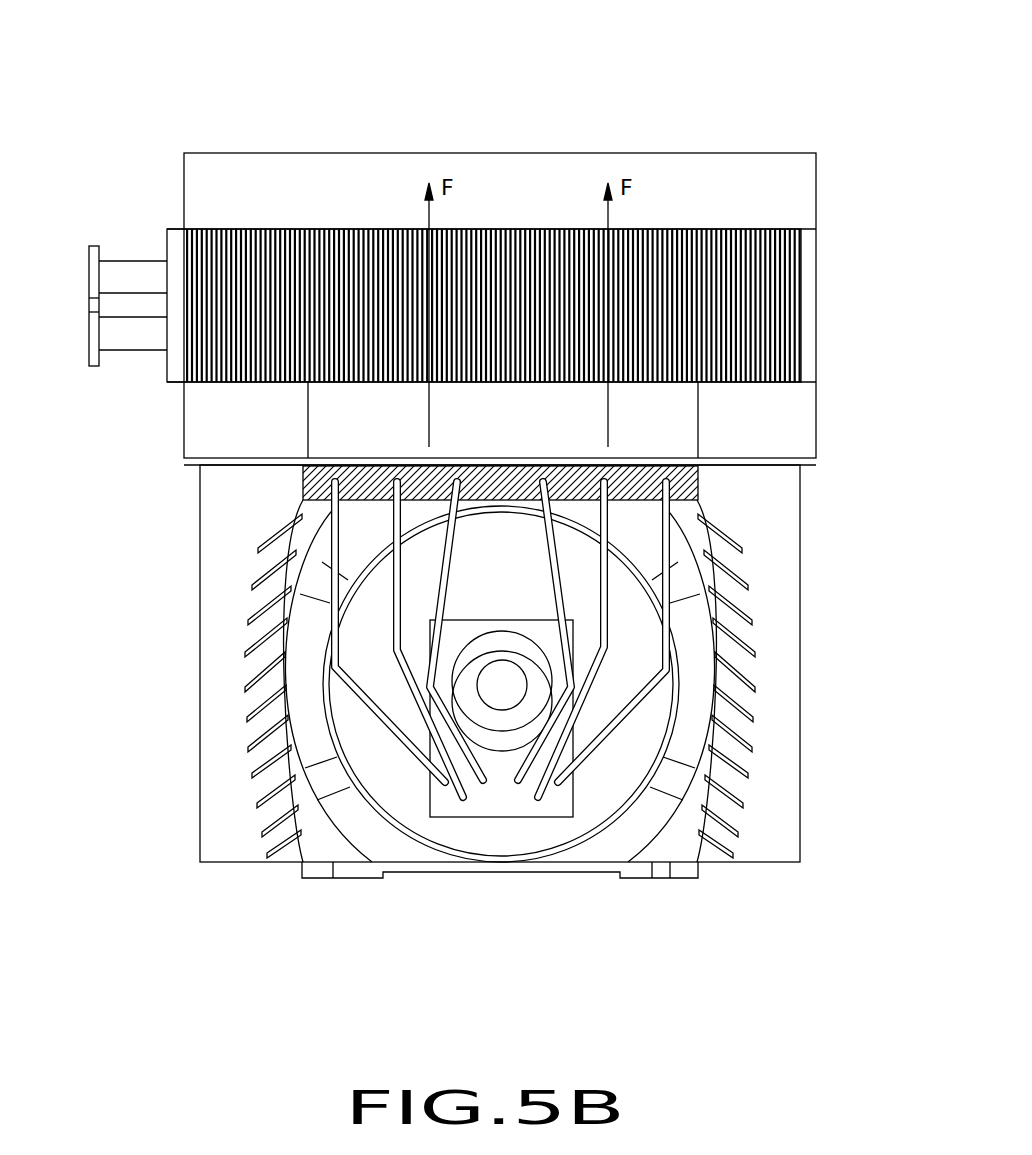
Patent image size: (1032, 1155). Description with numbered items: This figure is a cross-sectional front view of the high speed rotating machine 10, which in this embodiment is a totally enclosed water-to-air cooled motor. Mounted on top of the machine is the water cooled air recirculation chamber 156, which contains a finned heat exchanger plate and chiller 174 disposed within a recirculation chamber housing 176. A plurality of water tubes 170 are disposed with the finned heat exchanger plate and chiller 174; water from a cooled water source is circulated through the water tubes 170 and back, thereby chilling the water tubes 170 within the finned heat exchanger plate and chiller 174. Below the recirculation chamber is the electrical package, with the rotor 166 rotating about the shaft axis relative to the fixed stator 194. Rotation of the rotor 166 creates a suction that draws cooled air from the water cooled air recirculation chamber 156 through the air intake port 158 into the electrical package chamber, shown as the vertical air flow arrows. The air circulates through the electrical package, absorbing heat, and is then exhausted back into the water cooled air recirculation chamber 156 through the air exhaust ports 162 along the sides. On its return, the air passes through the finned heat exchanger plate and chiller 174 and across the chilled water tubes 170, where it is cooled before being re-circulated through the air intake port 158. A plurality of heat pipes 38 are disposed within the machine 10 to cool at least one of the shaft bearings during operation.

The high speed rotating machine 10 is at (703, 93).
The water cooled air recirculation chamber 156 is at (787, 190).
The finned heat exchanger plate and chiller 174 is at (763, 290).
The recirculation chamber housing 176 is at (818, 418).
The water tubes 170 is at (88, 333).
The air intake port 158 is at (541, 438).
The air exhaust port 162 is at (300, 560).
The stator 194 is at (695, 720).
The rotor 166 is at (645, 735).
The heat pipes 38 is at (452, 590).